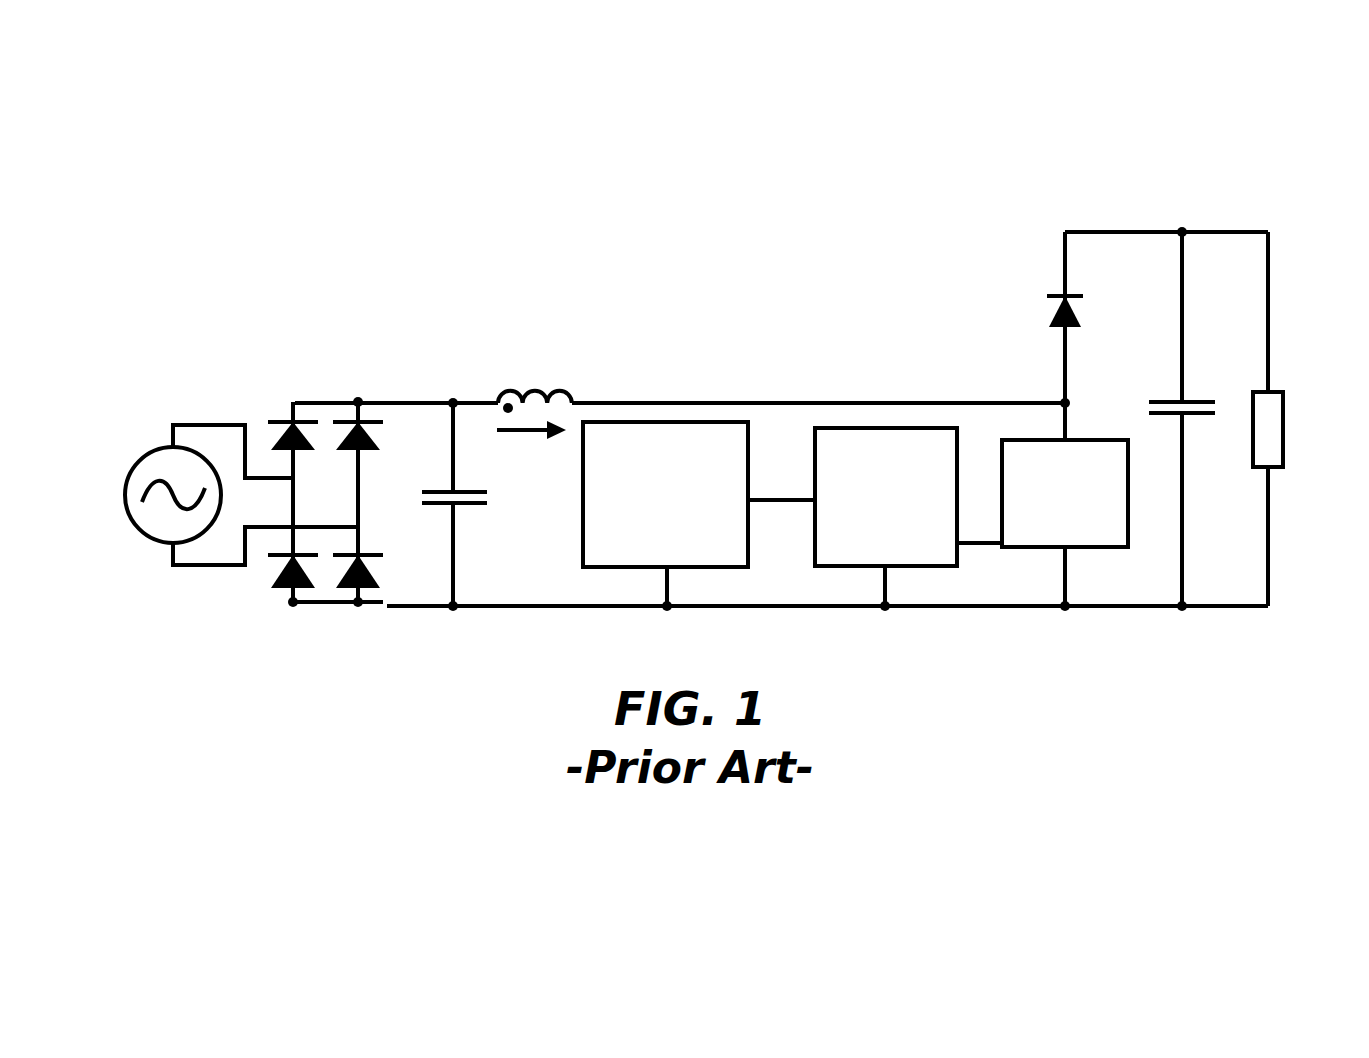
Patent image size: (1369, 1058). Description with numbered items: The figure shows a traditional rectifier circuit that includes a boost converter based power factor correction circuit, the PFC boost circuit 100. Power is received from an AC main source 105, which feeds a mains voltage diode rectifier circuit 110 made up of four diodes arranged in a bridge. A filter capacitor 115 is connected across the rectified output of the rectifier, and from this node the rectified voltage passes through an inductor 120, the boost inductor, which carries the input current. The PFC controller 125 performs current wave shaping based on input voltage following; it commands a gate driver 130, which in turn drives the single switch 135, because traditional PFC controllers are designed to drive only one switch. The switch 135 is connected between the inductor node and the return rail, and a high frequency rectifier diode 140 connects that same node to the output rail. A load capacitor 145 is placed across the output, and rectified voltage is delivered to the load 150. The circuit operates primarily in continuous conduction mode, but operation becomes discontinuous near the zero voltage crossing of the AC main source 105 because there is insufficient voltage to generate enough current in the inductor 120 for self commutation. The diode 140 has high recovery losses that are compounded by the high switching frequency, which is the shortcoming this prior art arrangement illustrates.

The PFC boost circuit 100 is at (925, 238).
The AC main source 105 is at (131, 470).
The mains voltage diode rectifier circuit 110 is at (385, 498).
The filter capacitor 115 is at (468, 508).
The inductor 120 is at (541, 393).
The PFC controller 125 is at (690, 422).
The gate driver 130 is at (885, 432).
The switch 135 is at (1097, 440).
The diode 140 is at (1050, 296).
The load capacitor 145 is at (1210, 401).
The load 150 is at (1283, 402).